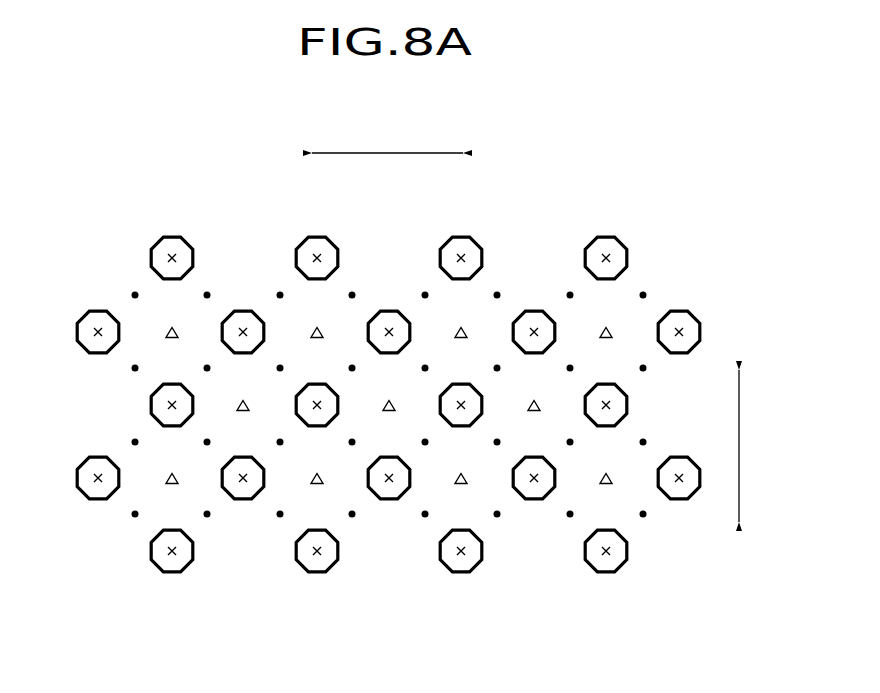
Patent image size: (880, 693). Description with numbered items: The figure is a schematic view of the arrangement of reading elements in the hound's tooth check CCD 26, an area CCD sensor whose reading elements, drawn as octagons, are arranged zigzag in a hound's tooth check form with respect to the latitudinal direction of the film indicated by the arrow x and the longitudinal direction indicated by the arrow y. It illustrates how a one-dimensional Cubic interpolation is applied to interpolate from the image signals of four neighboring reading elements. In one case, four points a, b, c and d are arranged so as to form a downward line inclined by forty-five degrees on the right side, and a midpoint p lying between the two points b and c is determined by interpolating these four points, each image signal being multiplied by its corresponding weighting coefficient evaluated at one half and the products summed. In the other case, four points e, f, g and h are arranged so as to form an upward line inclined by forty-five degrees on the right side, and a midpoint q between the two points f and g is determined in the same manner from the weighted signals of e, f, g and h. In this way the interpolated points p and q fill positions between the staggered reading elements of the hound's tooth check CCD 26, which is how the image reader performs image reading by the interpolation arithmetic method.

The hound's tooth check CCD 26 is at (555, 127).
The point a is at (462, 236).
The point b is at (535, 308).
The point c is at (610, 382).
The point d is at (680, 502).
The point e is at (387, 309).
The point f is at (320, 382).
The point g is at (230, 497).
The point h is at (152, 570).
The midpoint p is at (572, 367).
The midpoint q is at (279, 443).
The arrow x is at (380, 153).
The arrow y is at (740, 442).